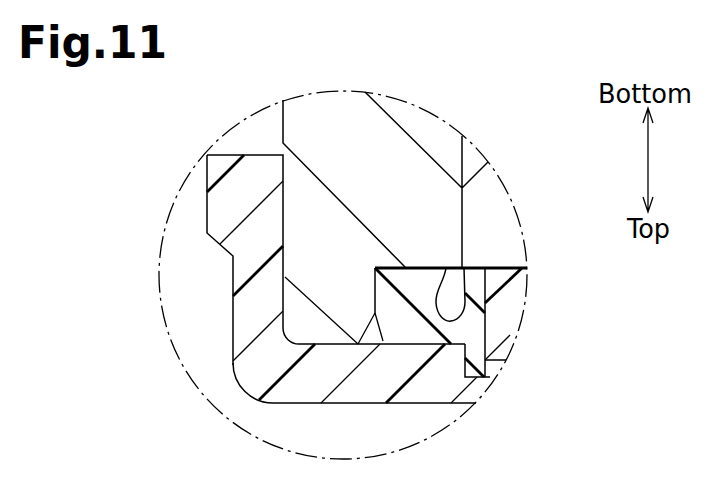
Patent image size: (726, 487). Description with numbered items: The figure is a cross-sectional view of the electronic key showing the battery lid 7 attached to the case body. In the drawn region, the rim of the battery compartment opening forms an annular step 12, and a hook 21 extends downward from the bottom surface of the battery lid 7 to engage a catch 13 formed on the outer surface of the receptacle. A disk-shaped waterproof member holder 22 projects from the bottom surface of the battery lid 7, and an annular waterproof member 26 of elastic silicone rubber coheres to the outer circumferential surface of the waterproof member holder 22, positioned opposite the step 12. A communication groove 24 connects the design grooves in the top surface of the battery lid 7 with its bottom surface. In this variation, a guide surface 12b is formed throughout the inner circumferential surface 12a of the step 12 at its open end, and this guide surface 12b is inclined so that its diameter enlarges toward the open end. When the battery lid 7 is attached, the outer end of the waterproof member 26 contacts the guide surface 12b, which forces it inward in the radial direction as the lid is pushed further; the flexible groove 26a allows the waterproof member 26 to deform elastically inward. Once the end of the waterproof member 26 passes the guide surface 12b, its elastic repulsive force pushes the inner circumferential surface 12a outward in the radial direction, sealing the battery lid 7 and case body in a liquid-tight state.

The battery lid 7 is at (295, 398).
The step 12 is at (323, 232).
The inner circumferential surface 12a is at (375, 287).
The guide surface 12b is at (375, 313).
The catch 13 is at (269, 183).
The hook 21 is at (207, 235).
The waterproof member holder 22 is at (482, 280).
The communication groove 24 is at (490, 377).
The waterproof member 26 is at (405, 267).
The flexible groove 26a is at (454, 280).